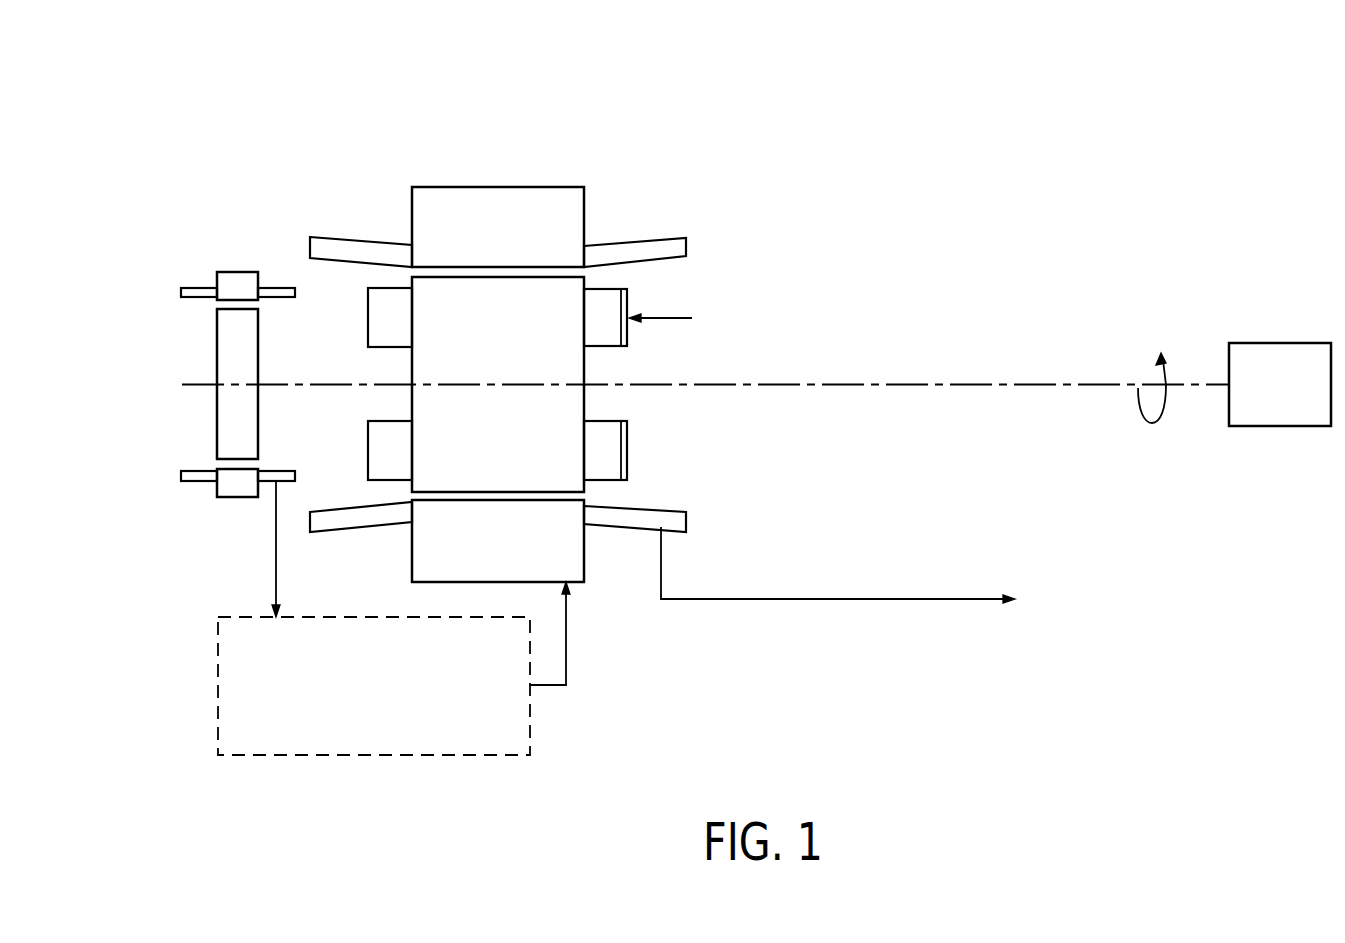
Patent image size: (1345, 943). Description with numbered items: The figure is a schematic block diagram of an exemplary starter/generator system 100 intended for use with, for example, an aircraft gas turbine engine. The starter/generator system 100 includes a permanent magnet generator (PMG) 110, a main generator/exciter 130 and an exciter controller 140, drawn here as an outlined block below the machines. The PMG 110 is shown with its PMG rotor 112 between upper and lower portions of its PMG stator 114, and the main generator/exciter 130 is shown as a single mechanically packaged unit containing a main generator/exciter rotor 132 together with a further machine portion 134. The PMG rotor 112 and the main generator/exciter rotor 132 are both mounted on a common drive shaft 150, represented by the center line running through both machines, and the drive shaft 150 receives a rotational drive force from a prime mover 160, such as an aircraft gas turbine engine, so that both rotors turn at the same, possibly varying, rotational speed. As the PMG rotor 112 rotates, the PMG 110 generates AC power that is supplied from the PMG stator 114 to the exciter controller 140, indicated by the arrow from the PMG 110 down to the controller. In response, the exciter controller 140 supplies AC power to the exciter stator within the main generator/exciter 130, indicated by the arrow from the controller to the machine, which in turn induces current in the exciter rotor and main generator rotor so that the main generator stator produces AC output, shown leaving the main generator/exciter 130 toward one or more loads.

The starter/generator system 100 is at (770, 172).
The permanent magnet generator (PMG) 110 is at (236, 112).
The PMG rotor 112 is at (217, 432).
The PMG stator 114 is at (197, 300).
The main generator/exciter 130 is at (489, 130).
The main generator/exciter rotor 132 is at (585, 379).
The exciter 134 is at (585, 553).
The exciter controller 140 is at (230, 610).
The drive shaft 150 is at (1093, 384).
The prime mover 160 is at (1283, 342).